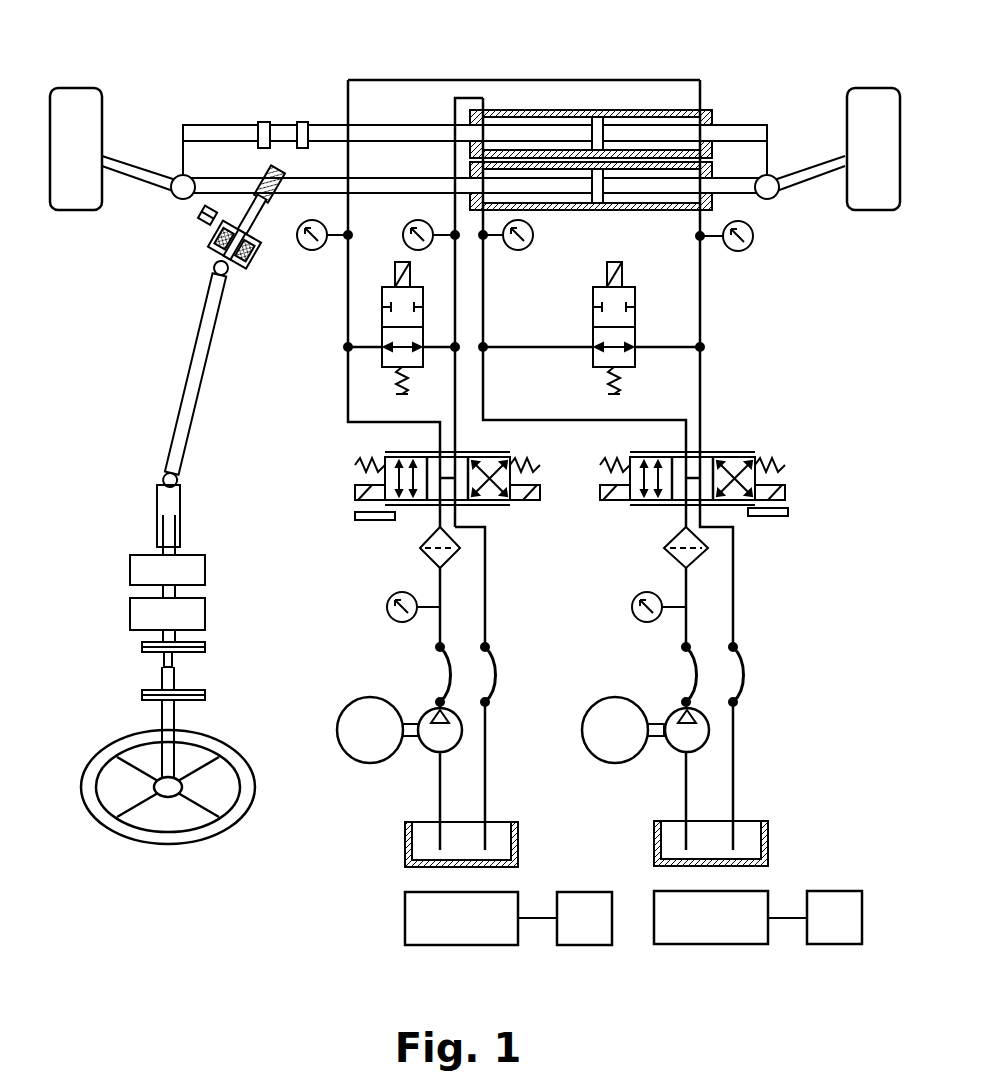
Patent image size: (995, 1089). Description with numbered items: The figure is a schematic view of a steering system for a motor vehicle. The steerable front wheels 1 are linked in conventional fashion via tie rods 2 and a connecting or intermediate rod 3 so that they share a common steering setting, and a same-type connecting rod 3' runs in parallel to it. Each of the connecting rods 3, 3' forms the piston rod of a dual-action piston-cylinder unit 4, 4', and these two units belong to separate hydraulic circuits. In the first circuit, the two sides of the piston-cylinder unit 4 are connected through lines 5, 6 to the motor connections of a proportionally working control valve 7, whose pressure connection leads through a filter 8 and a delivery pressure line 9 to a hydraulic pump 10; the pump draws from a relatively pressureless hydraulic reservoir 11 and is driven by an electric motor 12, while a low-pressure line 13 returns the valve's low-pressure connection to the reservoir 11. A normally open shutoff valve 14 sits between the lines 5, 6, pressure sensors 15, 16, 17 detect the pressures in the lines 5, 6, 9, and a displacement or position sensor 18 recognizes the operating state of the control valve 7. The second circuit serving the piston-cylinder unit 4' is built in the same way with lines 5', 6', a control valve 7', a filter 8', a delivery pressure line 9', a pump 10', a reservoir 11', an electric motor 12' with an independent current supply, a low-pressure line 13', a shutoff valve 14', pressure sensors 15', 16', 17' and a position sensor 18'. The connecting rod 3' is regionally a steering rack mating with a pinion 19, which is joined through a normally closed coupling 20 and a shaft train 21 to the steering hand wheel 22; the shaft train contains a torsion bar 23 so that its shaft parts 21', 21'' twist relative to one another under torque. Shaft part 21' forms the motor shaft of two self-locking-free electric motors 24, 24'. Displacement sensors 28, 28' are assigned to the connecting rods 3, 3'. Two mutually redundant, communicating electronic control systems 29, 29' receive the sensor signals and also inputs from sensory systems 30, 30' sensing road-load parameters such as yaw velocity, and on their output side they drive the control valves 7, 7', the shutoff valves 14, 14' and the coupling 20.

The steerable front wheels 1 is at (65, 98).
The tie rods 2 is at (133, 160).
The connecting rod 3 is at (498, 195).
The connecting rod 3' is at (466, 93).
The piston-cylinder unit 4 is at (591, 214).
The piston-cylinder unit 4' is at (591, 79).
The line 5 is at (582, 312).
The line 5' is at (453, 372).
The line 6 is at (730, 363).
The line 6' is at (522, 303).
The control valve 7 is at (692, 439).
The control valve 7' is at (455, 507).
The filter 8 is at (661, 547).
The filter 8' is at (404, 547).
The delivery pressure line 9 is at (655, 637).
The delivery pressure line 9' is at (400, 637).
The hydraulic pump 10 is at (673, 776).
The hydraulic pump 10' is at (424, 776).
The hydraulic reservoir 11 is at (747, 843).
The hydraulic reservoir 11' is at (427, 847).
The electric motor 12 is at (623, 760).
The electric motor 12' is at (377, 762).
The low-pressure line 13 is at (784, 745).
The low-pressure line 13' is at (525, 744).
The shutoff valve 14 is at (591, 328).
The shutoff valve 14' is at (359, 328).
The pressure sensor 15 is at (534, 237).
The pressure sensor 15' is at (406, 226).
The pressure sensor 16 is at (737, 265).
The pressure sensor 16' is at (305, 259).
The pressure sensor 17 is at (626, 604).
The pressure sensor 17' is at (352, 606).
The displacement or position sensor 18 is at (803, 513).
The displacement or position sensor 18' is at (329, 511).
The pinion 19 is at (252, 186).
The coupling 20 is at (247, 272).
The shaft train 21 is at (226, 414).
The shaft part 21' is at (234, 594).
The shaft part 21'' is at (114, 722).
The steering hand wheel 22 is at (128, 833).
The torsion bar 23 is at (163, 662).
The electric motor 24 is at (131, 614).
The electric motor 24' is at (131, 570).
The displacement sensor 28 is at (300, 96).
The displacement sensor 28' is at (243, 96).
The electronic control system 29 is at (711, 917).
The electronic control system 29' is at (461, 918).
The sensory system 30 is at (815, 917).
The sensory system 30' is at (565, 918).